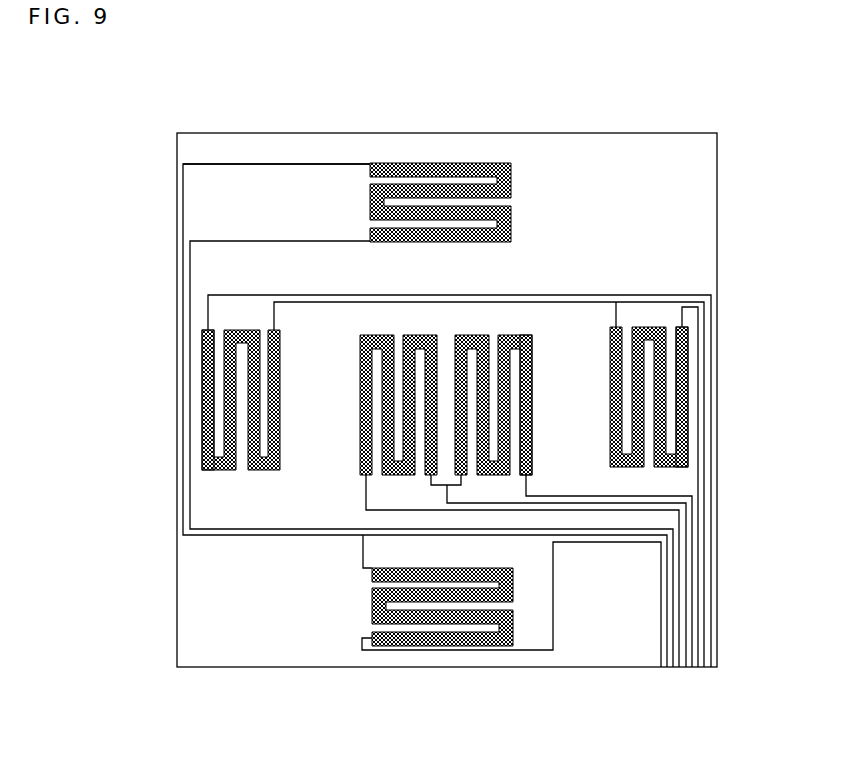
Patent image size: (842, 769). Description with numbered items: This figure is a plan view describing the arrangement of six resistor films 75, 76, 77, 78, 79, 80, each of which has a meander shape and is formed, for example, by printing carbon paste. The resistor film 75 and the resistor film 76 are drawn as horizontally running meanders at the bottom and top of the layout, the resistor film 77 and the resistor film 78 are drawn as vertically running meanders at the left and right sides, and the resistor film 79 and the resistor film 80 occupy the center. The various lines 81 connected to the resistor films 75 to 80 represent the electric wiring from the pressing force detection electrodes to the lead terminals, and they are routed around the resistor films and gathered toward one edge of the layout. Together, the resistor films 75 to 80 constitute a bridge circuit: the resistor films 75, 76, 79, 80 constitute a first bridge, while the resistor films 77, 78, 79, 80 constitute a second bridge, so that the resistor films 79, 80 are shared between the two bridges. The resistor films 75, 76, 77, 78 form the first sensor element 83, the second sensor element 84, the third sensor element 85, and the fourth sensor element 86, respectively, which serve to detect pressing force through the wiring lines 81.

The resistor film 75 is at (415, 646).
The resistor film 76 is at (416, 163).
The resistor film 77 is at (202, 432).
The resistor film 78 is at (683, 410).
The resistor film 79 is at (360, 458).
The resistor film 80 is at (533, 353).
The lines 81 is at (558, 295).
The first sensor element 83 is at (466, 660).
The second sensor element 84 is at (483, 146).
The third sensor element 85 is at (196, 357).
The fourth sensor element 86 is at (697, 374).